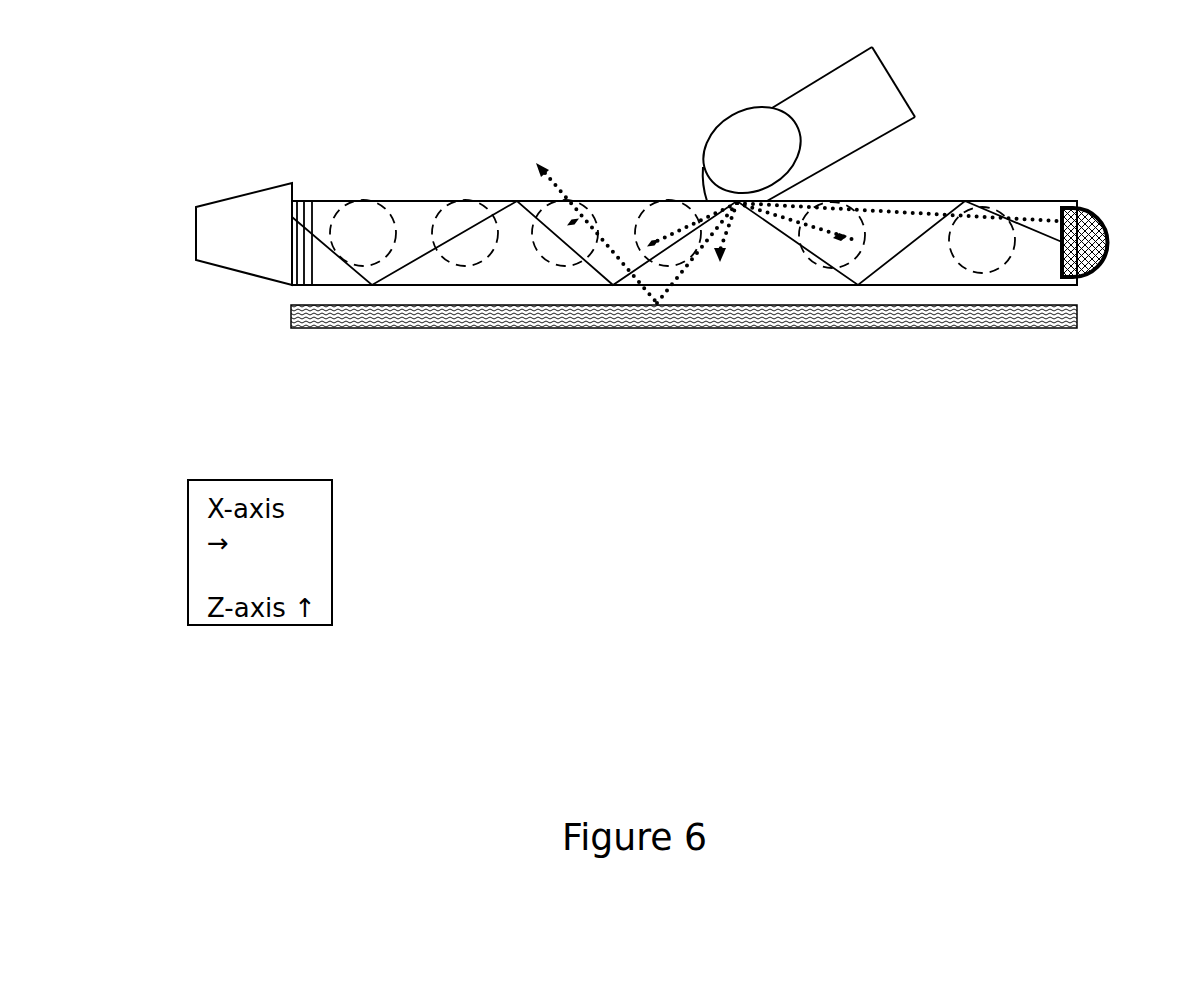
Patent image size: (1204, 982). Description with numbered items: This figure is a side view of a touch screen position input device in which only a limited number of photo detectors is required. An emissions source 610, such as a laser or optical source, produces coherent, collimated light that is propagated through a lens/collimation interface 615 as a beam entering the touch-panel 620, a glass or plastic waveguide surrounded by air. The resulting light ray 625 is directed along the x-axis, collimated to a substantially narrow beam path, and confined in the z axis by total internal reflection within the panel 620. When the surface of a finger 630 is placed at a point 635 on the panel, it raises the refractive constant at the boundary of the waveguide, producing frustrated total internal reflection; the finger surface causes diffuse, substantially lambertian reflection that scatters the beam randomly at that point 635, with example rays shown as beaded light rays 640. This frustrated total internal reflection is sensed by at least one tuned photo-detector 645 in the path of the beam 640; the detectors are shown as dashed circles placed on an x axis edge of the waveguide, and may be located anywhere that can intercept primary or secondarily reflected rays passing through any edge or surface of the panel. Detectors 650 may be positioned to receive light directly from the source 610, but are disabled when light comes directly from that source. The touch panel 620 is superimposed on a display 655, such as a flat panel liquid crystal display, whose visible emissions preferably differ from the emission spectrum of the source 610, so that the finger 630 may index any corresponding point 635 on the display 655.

The emissions source 610 is at (230, 188).
The lens/collimation interface 615 is at (298, 190).
The touch-panel 620 is at (990, 202).
The light ray 625 is at (423, 252).
The finger 630 is at (798, 87).
The point 635 is at (704, 200).
The beaded light rays 640 is at (793, 207).
The tuned photo-detector 645 is at (447, 250).
The detectors 650 is at (1107, 247).
The display 655 is at (317, 327).